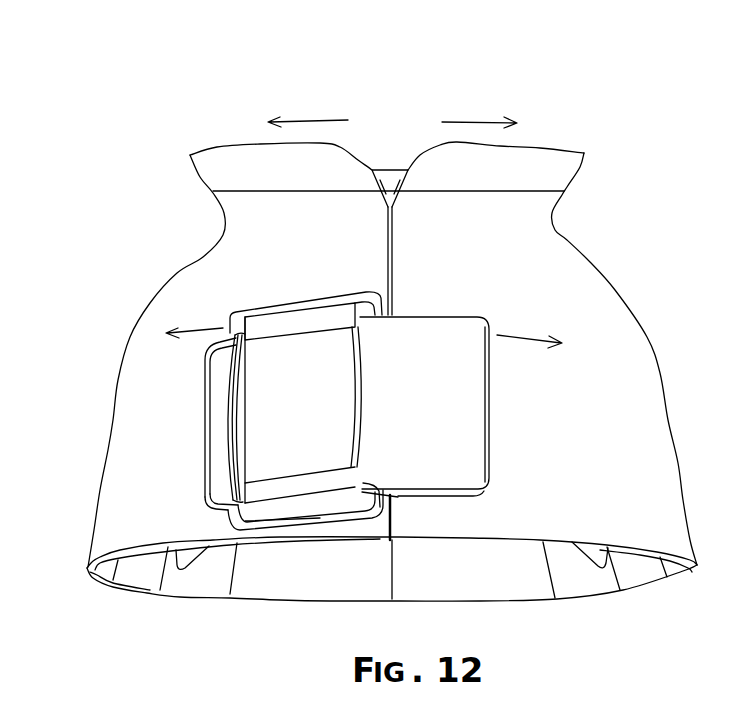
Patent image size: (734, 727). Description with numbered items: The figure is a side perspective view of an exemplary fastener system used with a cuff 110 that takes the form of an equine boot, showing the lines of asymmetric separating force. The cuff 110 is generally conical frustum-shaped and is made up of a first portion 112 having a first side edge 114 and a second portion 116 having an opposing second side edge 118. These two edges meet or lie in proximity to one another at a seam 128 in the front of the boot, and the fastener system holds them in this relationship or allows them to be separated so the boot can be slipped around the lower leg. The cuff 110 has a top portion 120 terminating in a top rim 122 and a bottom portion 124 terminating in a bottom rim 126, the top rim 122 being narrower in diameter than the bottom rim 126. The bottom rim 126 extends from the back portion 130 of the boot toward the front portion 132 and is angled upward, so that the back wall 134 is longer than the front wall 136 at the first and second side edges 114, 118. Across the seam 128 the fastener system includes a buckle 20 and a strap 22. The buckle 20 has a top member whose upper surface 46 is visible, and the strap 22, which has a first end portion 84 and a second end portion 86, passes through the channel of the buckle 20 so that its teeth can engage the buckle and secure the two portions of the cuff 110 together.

The cuff 110 is at (185, 112).
The first portion 112 is at (176, 272).
The first side edge 114 is at (387, 257).
The second portion 116 is at (616, 288).
The second side edge 118 is at (393, 236).
The top portion 120 is at (205, 185).
The top rim 122 is at (205, 152).
The bottom portion 124 is at (86, 537).
The bottom rim 126 is at (97, 580).
The seam 128 is at (390, 185).
The back portion 130 is at (269, 611).
The front portion 132 is at (363, 545).
The back wall 134 is at (470, 578).
The front wall 136 is at (422, 517).
The buckle 20 is at (230, 517).
The strap 22 is at (494, 490).
The upper surface 46 is at (303, 417).
The first end portion 84 is at (491, 422).
The second end portion 86 is at (204, 425).